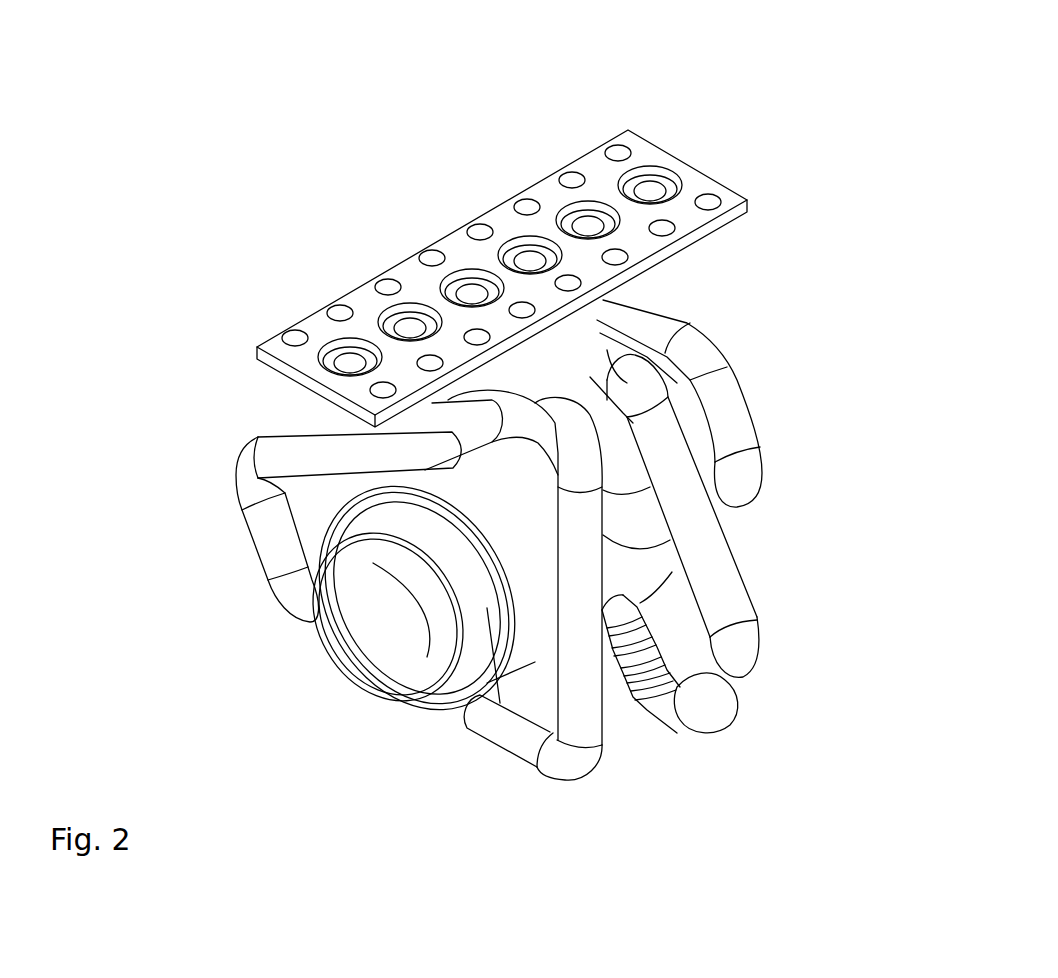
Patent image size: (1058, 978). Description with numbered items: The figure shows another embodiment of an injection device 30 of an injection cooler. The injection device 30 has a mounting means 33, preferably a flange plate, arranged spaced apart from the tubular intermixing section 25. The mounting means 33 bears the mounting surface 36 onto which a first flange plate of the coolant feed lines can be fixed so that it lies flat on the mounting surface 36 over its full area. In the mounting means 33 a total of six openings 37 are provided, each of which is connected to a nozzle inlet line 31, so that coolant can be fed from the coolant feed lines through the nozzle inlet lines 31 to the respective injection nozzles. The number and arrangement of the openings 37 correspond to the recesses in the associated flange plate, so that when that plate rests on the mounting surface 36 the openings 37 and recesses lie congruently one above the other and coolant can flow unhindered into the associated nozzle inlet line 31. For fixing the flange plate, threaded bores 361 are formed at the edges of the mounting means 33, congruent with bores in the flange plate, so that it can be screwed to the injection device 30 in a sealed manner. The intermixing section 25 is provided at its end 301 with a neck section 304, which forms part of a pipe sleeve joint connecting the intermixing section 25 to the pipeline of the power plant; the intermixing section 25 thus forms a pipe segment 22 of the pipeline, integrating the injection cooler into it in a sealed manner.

The injection device 30 is at (253, 113).
The mounting means 33 is at (658, 132).
The mounting surface 36 is at (705, 186).
The openings 37 is at (530, 258).
The threaded bores 361 is at (480, 232).
The end of the intermixing section 301 is at (257, 623).
The neck section 304 is at (382, 648).
The pipe segment 22 is at (462, 707).
The intermixing section 25 is at (620, 597).
The nozzle inlet line 31 is at (755, 507).